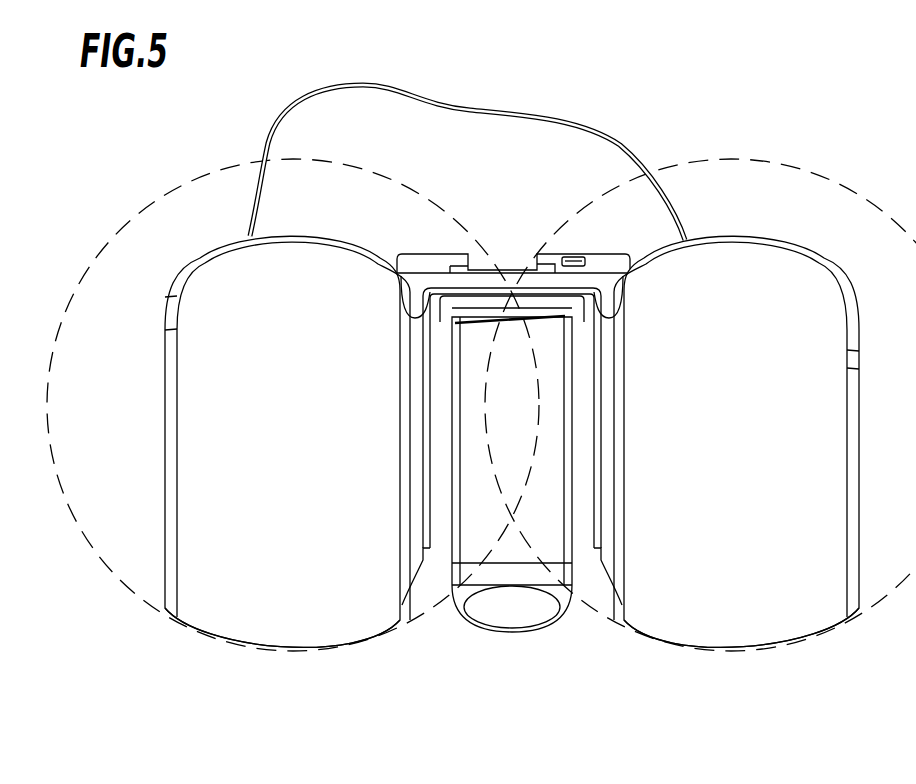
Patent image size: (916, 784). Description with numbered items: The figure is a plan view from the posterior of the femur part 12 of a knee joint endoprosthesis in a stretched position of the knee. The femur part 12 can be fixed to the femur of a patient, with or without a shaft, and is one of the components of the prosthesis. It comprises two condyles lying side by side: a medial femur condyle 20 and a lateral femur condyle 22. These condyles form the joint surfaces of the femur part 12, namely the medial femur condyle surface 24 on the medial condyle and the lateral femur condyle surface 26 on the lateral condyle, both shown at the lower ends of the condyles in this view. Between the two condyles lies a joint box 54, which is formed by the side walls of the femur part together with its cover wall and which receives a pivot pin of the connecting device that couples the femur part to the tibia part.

The femur part 12 is at (624, 128).
The medial femur condyle 20 is at (248, 619).
The lateral femur condyle 22 is at (693, 617).
The medial femur condyle surface 24 is at (288, 652).
The lateral femur condyle surface 26 is at (732, 652).
The joint box 54 is at (523, 412).